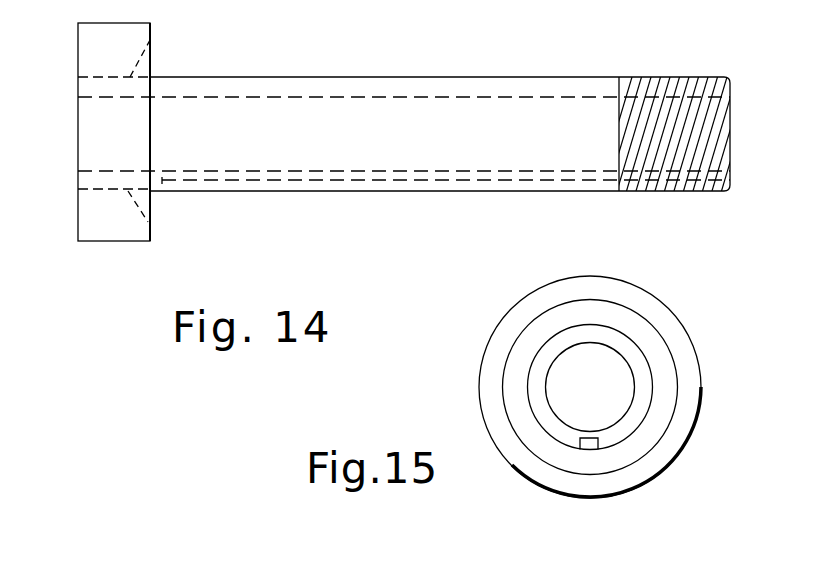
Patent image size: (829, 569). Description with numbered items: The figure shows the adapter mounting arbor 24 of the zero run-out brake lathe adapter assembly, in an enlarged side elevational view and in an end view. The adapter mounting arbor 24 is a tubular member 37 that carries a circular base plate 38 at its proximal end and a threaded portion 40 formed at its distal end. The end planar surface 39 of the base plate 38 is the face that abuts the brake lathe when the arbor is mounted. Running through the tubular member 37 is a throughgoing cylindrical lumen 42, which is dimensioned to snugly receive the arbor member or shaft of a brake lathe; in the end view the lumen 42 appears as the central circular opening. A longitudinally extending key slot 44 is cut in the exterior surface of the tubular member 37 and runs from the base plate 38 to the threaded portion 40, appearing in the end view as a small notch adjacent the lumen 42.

In FIG. 14, the adapter mounting arbor 24 is at (368, 204).
In FIG. 14, the tubular member 37 is at (492, 77).
In FIG. 15, the tubular member 37 is at (637, 363).
In FIG. 14, the circular base plate 38 is at (105, 235).
In FIG. 15, the circular base plate 38 is at (660, 458).
In FIG. 14, the end planar surface 39 is at (78, 68).
In FIG. 14, the threaded portion 40 is at (668, 191).
In FIG. 14, the throughgoing cylindrical lumen 42 is at (378, 142).
In FIG. 15, the throughgoing cylindrical lumen 42 is at (607, 379).
In FIG. 14, the key slot 44 is at (484, 191).
In FIG. 15, the key slot 44 is at (578, 445).